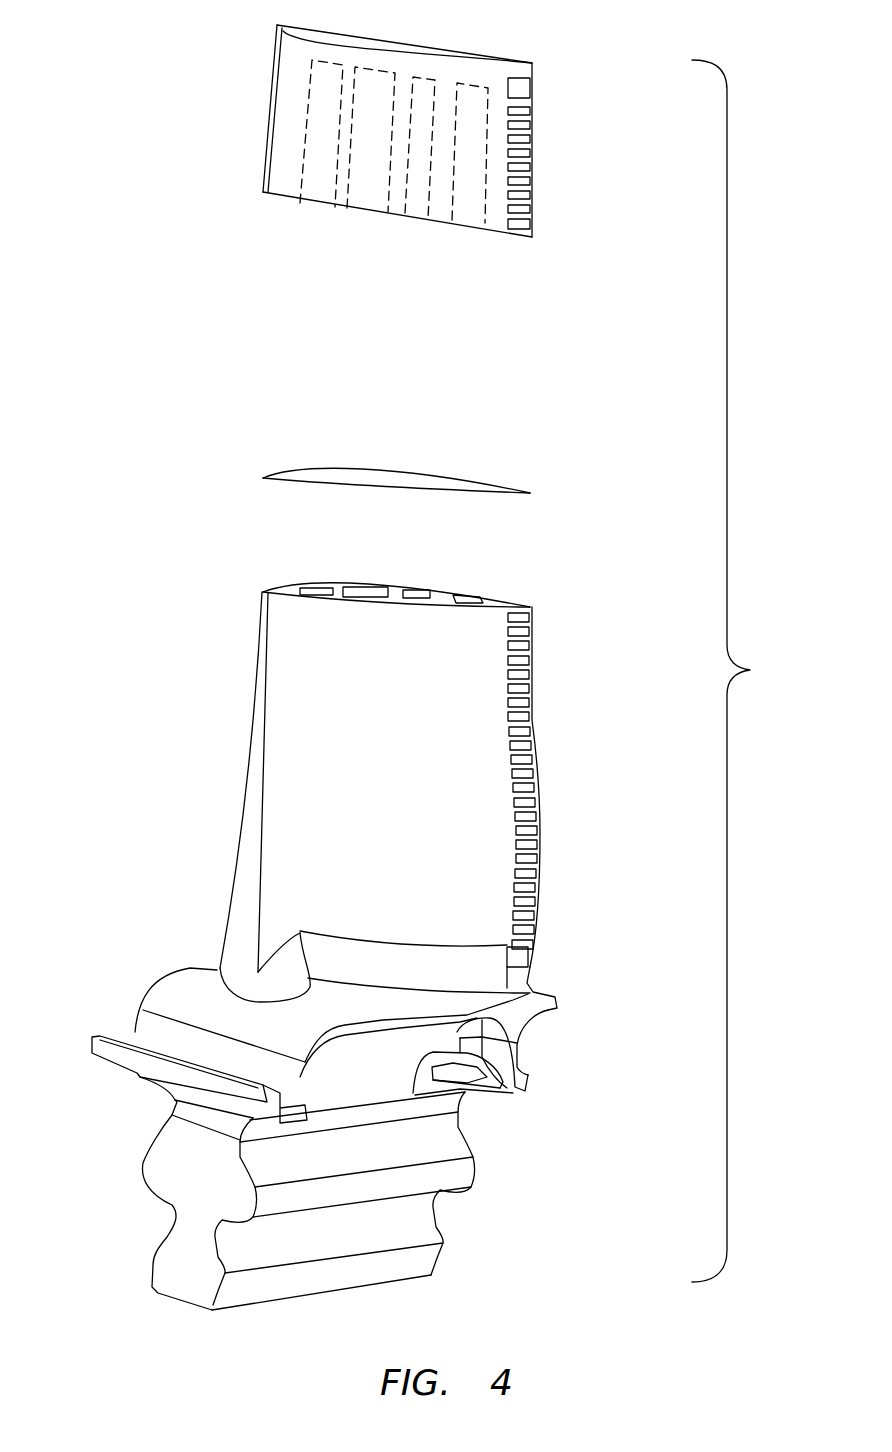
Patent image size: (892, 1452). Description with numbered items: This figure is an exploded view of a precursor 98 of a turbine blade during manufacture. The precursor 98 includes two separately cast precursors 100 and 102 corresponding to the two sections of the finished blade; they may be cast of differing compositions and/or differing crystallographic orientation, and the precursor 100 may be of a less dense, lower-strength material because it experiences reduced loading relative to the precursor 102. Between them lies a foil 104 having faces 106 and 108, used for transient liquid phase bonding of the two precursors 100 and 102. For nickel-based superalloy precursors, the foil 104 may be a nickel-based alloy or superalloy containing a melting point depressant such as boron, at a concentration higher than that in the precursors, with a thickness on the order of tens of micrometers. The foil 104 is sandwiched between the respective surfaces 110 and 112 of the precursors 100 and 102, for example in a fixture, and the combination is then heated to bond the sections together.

The precursor 98 is at (739, 671).
The precursor 100 is at (575, 167).
The precursor 102 is at (575, 922).
The foil 104 is at (555, 472).
The face 106 is at (410, 477).
The face 108 is at (385, 481).
The surface 110 is at (375, 217).
The surface 112 is at (397, 591).